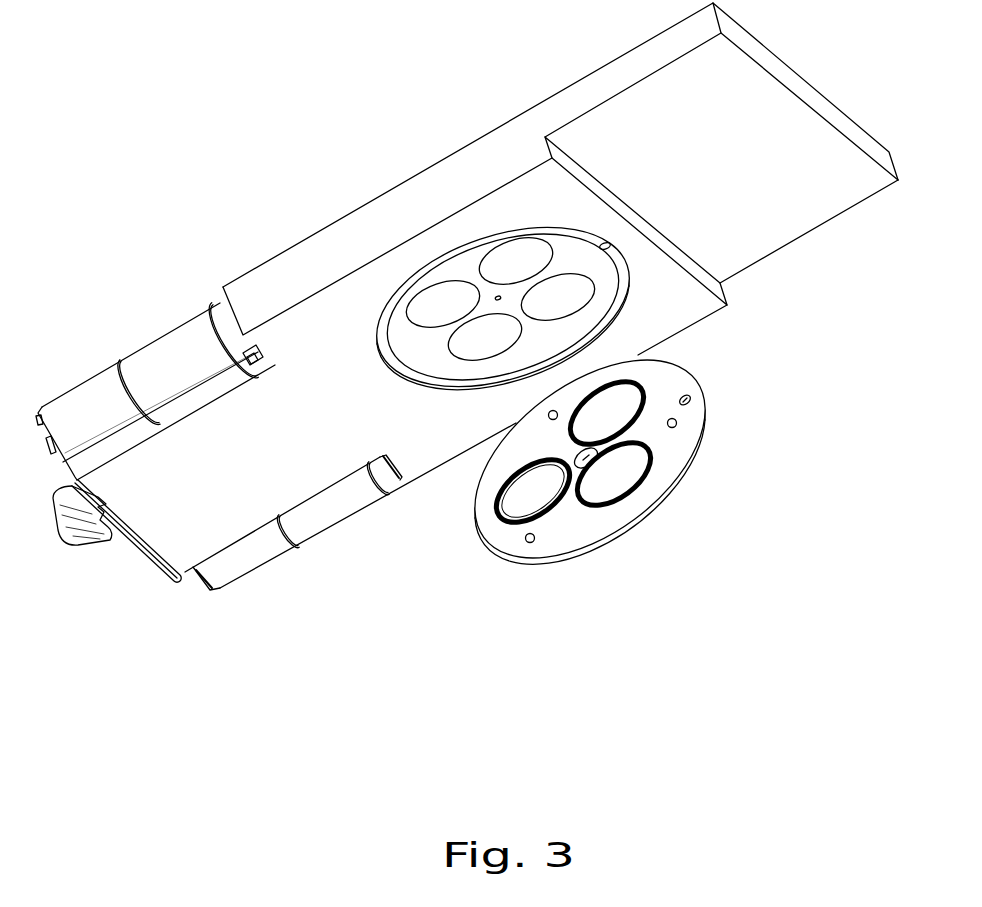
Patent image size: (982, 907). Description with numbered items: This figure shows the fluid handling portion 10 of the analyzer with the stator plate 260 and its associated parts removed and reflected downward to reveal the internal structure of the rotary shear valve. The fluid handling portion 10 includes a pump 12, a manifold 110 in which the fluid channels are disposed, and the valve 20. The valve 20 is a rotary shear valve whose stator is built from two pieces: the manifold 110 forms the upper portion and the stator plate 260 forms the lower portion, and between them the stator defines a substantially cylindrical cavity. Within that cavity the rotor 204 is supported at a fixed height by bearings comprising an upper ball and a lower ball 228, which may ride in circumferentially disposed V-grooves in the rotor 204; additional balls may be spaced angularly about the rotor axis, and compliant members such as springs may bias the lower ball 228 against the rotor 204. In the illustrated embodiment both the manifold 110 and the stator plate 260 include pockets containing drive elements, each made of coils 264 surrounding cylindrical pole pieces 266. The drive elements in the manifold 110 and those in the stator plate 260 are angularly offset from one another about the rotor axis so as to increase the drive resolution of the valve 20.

The fluid handling portion 10 is at (250, 222).
The manifold 110 is at (368, 238).
The pump 12 is at (158, 380).
The valve 20 is at (540, 337).
The rotor 204 is at (573, 260).
The stator plate 260 is at (630, 523).
The coils 264 is at (503, 526).
The cylindrical pole pieces 266 is at (528, 493).
The lower ball 228 is at (672, 423).